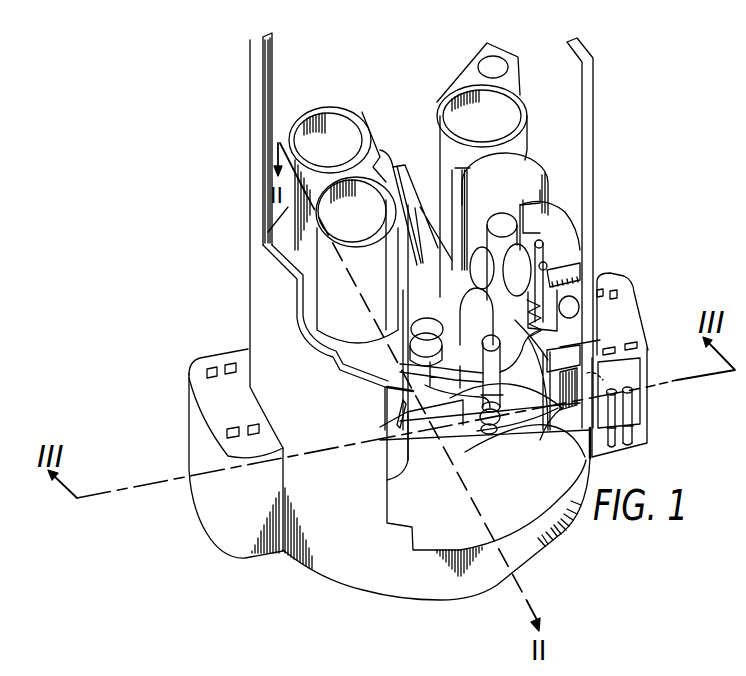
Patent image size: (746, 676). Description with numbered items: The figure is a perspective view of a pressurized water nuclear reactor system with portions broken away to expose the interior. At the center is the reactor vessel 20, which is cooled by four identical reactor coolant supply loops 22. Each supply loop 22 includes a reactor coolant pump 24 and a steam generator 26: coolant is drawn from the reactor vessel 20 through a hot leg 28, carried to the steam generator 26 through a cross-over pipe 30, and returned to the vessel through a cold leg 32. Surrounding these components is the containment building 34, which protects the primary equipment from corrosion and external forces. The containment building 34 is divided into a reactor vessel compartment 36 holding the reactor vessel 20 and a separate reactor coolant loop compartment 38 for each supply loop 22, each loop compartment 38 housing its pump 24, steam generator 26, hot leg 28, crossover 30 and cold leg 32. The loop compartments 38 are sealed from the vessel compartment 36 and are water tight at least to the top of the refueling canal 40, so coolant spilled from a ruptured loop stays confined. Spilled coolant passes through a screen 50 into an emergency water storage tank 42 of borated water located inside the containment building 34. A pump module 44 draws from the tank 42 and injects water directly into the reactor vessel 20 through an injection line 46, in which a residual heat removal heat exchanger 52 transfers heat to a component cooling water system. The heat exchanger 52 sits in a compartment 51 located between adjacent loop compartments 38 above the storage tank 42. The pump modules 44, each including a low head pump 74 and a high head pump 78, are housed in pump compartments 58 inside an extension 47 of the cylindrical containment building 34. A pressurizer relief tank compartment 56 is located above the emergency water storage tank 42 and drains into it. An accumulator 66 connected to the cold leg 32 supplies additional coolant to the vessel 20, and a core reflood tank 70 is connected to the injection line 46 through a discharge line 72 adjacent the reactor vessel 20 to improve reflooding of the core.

The reactor vessel 20 is at (413, 333).
The reactor coolant supply loop 22 is at (485, 316).
The reactor coolant pump 24 is at (490, 435).
The steam generator 26 is at (515, 243).
The hot leg 28 is at (480, 414).
The cross-over pipe 30 is at (508, 440).
The cold leg 32 is at (483, 365).
The containment building 34 is at (290, 378).
The reactor vessel compartment 36 is at (397, 343).
The reactor coolant loop compartment 38 is at (333, 127).
The refueling canal 40 is at (445, 484).
The emergency water storage tank 42 is at (580, 440).
The pump module 44 is at (629, 381).
The injection line 46 is at (387, 397).
The extension 47 is at (200, 410).
The screen 50 is at (598, 345).
The compartment 51 is at (548, 213).
The residual heat removal heat exchanger 52 is at (548, 232).
The pressurizer relief tank compartment 56 is at (493, 70).
The pump compartment 58 is at (638, 362).
The accumulator 66 is at (547, 257).
The core reflood tank 70 is at (470, 220).
The discharge line 72 is at (413, 360).
The low head pump 74 is at (634, 408).
The high head pump 78 is at (634, 436).